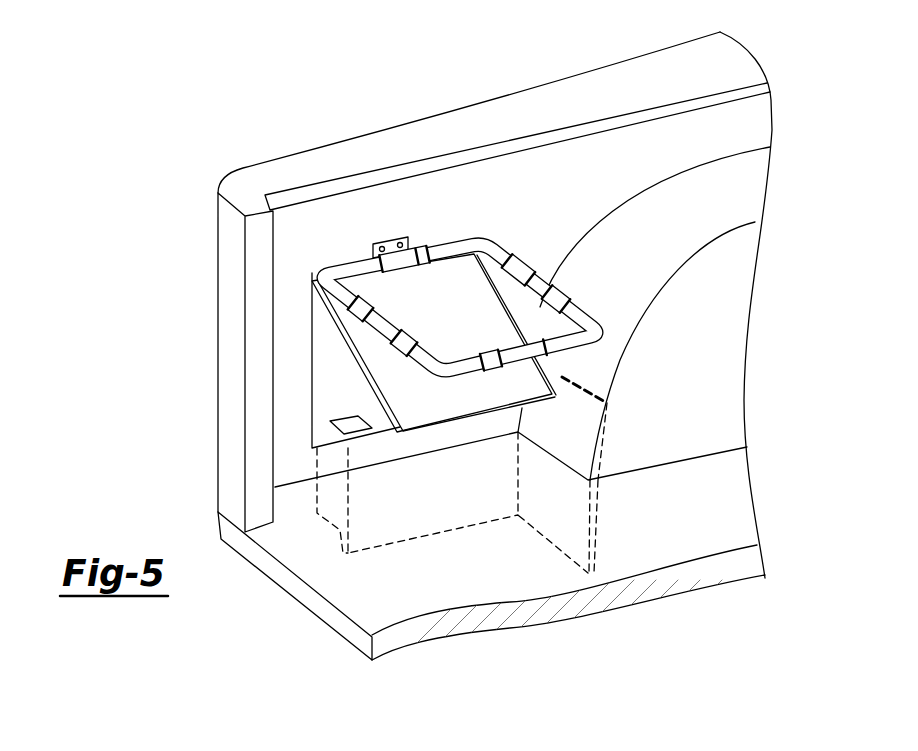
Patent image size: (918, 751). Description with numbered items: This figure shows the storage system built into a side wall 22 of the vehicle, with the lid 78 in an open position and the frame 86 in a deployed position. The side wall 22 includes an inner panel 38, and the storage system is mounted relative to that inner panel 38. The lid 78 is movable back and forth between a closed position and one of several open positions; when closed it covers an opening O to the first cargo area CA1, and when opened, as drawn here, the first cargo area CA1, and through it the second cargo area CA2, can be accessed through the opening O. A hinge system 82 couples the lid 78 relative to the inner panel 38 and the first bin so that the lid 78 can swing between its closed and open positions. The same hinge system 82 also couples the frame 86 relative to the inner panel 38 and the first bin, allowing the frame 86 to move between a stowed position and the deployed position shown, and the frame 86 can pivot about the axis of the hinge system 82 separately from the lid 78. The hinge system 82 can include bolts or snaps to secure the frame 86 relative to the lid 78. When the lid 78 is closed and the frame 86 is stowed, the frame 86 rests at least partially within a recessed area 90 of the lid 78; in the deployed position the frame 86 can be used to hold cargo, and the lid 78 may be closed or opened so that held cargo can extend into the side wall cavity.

The side wall 22 is at (490, 72).
The inner panel 38 is at (598, 167).
The lid 78 is at (562, 373).
The hinge system 82 is at (393, 240).
The frame 86 is at (503, 258).
The recessed area 90 is at (437, 424).
The opening O is at (313, 372).
The first cargo area CA1 is at (330, 342).
The second cargo area CA2 is at (356, 417).